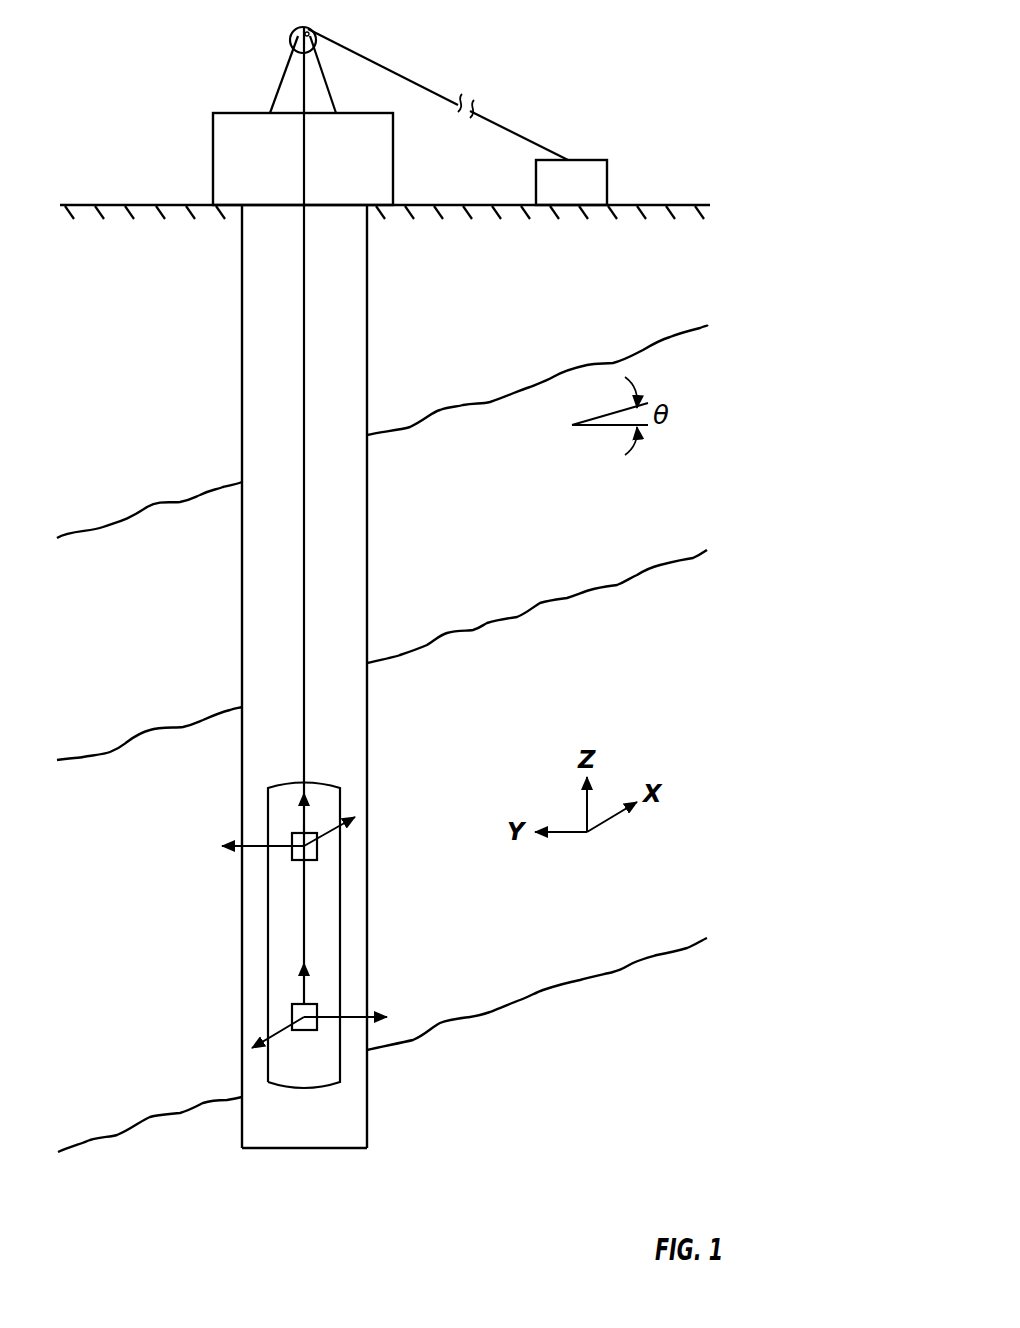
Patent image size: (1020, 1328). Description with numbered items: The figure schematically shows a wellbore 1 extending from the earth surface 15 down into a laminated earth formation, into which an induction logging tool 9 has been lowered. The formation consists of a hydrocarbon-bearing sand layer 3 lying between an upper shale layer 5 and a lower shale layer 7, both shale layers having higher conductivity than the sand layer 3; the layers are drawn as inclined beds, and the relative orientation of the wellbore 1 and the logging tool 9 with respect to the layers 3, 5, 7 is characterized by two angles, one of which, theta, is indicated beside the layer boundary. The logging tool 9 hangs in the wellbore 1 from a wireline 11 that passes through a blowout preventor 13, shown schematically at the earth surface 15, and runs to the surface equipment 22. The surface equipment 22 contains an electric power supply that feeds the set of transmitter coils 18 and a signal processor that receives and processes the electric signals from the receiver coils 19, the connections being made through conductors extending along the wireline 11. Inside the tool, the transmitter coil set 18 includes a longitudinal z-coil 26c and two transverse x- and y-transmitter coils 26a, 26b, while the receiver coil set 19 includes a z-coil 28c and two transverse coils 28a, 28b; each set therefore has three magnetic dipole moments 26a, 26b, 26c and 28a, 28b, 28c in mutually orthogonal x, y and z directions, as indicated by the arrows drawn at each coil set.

The wellbore 1 is at (277, 613).
The hydrocarbon-bearing sand layer 3 is at (120, 950).
The upper shale layer 5 is at (120, 643).
The lower shale layer 7 is at (120, 1200).
The induction logging tool 9 is at (268, 948).
The wireline 11 is at (400, 70).
The blowout preventor 13 is at (228, 150).
The earth surface 15 is at (130, 204).
The transmitter coils 18 is at (296, 832).
The receiver coils 19 is at (296, 1003).
The surface equipment 22 is at (607, 177).
The x-transmitter coil 26a is at (318, 833).
The y-transmitter coil 26b is at (252, 846).
The longitudinal z-coil 26c is at (307, 812).
The transverse receiver coil 28a is at (280, 1032).
The transverse receiver coil 28b is at (350, 1017).
The receiver z-coil 28c is at (307, 982).